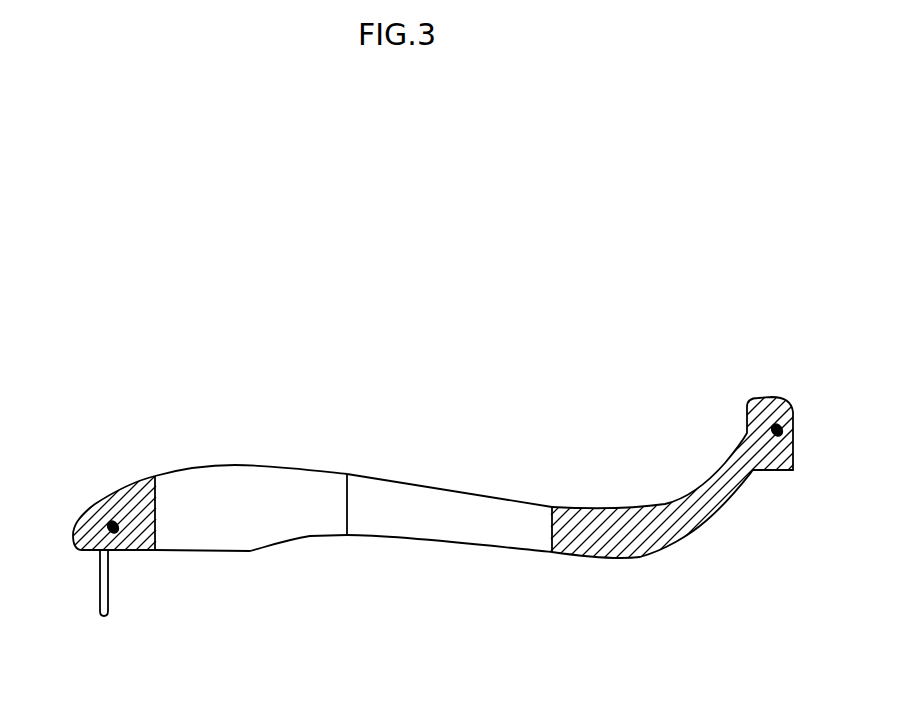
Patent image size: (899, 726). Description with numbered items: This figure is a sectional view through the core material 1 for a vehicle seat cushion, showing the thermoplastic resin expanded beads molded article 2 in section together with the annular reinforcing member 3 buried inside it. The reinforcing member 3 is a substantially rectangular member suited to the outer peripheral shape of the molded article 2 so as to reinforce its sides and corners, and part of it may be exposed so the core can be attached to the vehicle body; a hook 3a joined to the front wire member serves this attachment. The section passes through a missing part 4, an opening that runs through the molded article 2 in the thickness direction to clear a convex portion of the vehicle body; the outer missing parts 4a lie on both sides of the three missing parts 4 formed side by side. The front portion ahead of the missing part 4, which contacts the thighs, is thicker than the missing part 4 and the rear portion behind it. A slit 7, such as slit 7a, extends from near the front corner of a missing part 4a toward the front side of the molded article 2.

The core material for a seat cushion for a vehicle 1 is at (432, 474).
The thermoplastic resin expanded beads molded article 2 is at (605, 525).
The annular reinforcing member 3 is at (113, 527).
The hook 3a is at (100, 582).
The missing part 4 is at (449, 561).
The missing part 4a is at (425, 520).
The slit 7 is at (251, 454).
The slit 7a is at (253, 497).